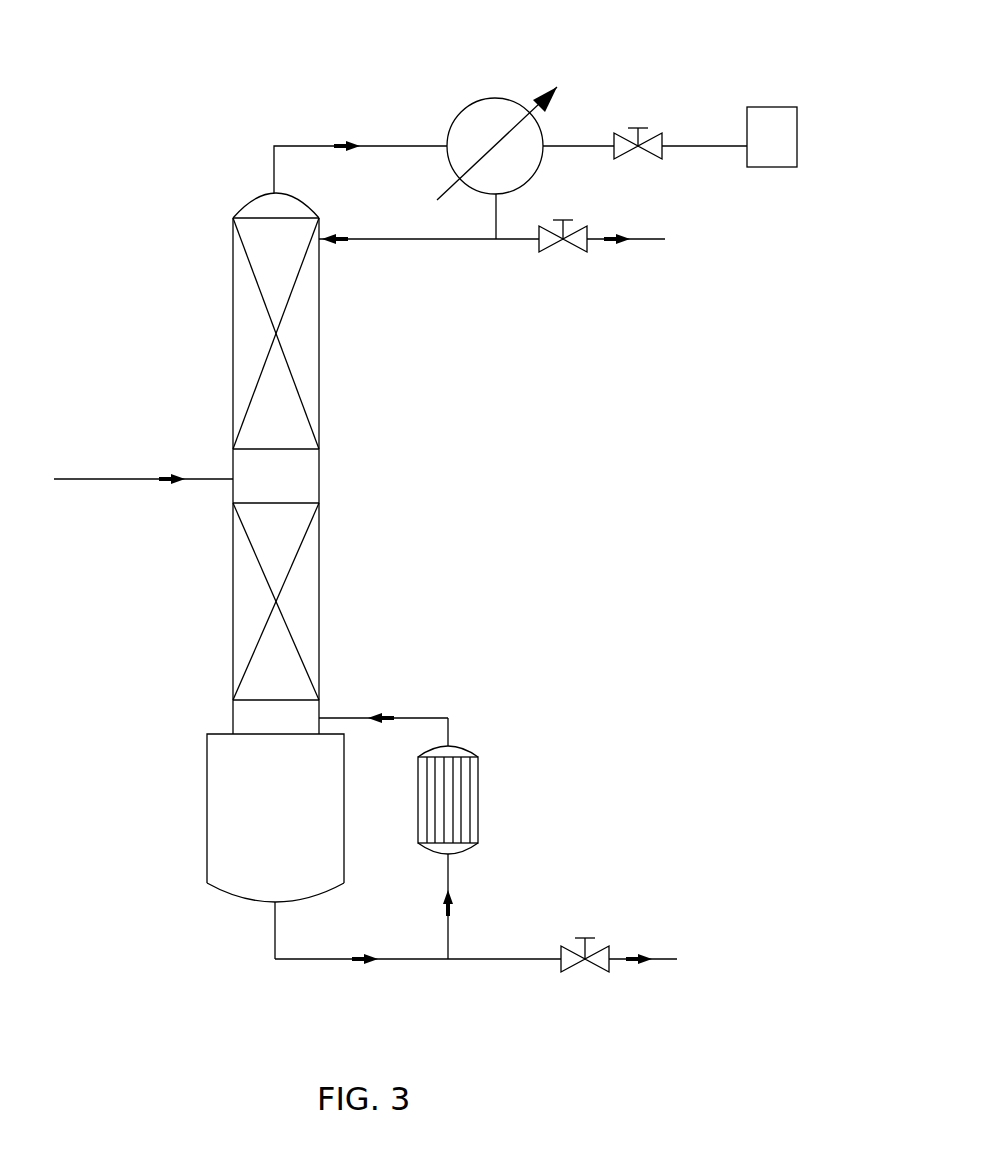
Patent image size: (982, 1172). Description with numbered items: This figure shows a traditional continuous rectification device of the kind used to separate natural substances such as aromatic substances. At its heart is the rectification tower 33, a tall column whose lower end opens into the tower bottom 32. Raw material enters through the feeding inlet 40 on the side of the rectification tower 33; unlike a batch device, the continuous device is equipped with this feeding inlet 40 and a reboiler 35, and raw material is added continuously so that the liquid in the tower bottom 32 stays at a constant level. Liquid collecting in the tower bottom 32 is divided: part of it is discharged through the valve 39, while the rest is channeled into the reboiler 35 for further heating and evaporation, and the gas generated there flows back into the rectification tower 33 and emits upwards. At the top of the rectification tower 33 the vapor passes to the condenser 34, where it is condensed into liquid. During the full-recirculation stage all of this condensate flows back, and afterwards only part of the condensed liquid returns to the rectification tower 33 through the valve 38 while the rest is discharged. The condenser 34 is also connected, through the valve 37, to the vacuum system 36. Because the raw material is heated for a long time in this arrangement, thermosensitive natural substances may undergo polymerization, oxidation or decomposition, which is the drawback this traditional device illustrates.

The tower bottom 32 is at (207, 827).
The rectification tower 33 is at (222, 330).
The condenser 34 is at (470, 100).
The reboiler 35 is at (479, 797).
The vacuum system 36 is at (775, 107).
The valve 37 is at (730, 200).
The valve 38 is at (585, 253).
The valve 39 is at (593, 940).
The feeding inlet 40 is at (125, 479).